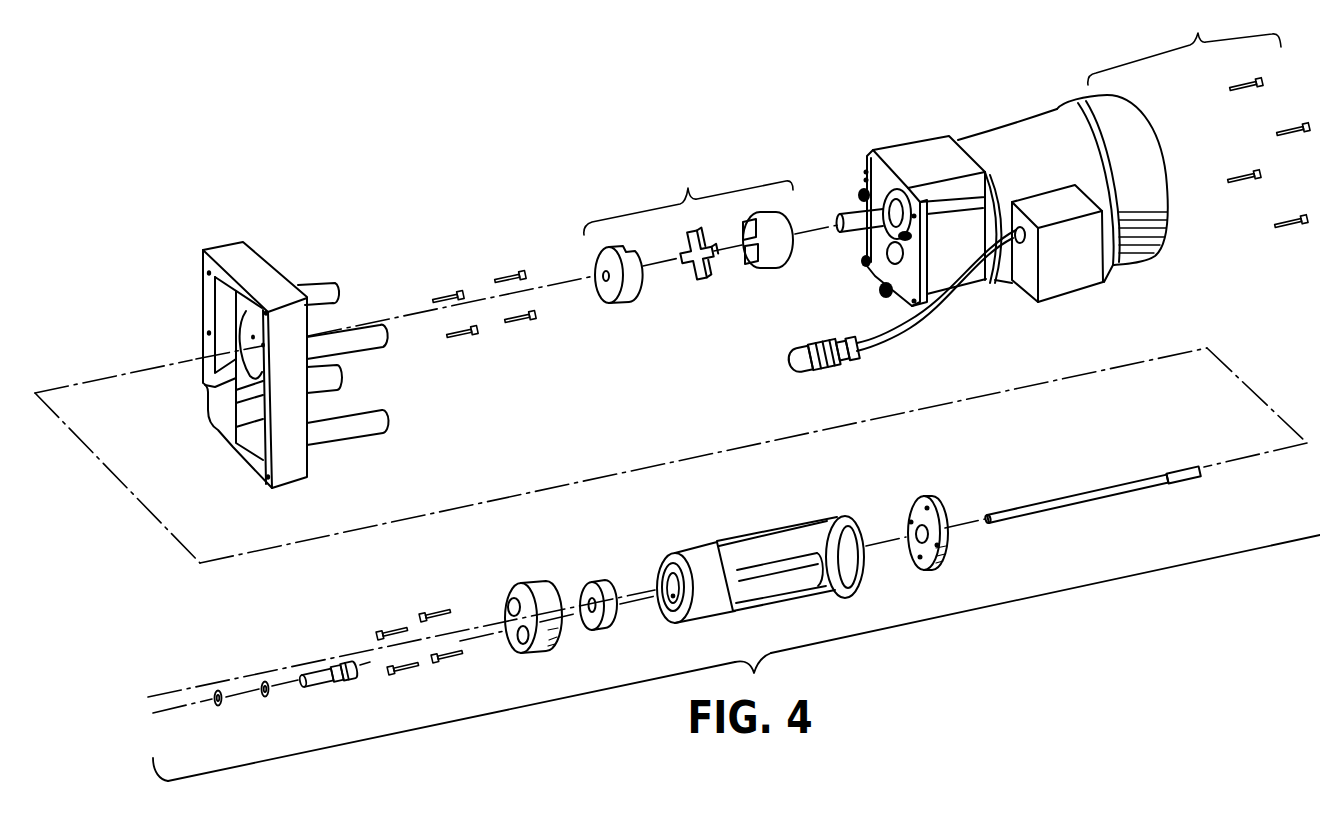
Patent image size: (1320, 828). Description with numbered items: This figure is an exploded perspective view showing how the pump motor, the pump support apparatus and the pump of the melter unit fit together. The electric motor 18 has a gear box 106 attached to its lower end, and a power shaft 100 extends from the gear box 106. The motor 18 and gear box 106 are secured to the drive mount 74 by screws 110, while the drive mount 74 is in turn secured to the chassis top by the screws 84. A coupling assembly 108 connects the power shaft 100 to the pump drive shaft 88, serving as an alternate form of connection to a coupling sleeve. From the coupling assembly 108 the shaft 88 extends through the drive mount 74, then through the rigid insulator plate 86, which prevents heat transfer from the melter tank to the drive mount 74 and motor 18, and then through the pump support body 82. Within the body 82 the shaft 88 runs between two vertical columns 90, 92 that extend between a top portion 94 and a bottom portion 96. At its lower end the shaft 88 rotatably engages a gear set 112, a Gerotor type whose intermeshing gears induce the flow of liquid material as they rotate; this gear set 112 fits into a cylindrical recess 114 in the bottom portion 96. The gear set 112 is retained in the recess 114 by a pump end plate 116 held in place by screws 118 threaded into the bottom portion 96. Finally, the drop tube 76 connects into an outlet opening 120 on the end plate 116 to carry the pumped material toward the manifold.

The electric motor 18 is at (1013, 140).
The drive mount 74 is at (250, 262).
The drop tube 76 is at (340, 687).
The pump support body 82 is at (770, 568).
The screws 84 is at (528, 307).
The rigid insulator plate 86 is at (922, 500).
The pump drive shaft 88 is at (1053, 497).
The vertical column 90 is at (765, 540).
The vertical column 92 is at (803, 583).
The top portion 94 is at (842, 530).
The bottom portion 96 is at (697, 553).
The power shaft 100 is at (848, 213).
The gear box 106 is at (917, 152).
The coupling assembly 108 is at (694, 226).
The screws 110 is at (1298, 215).
The gear set 112 is at (605, 580).
The cylindrical recess 114 is at (677, 603).
The pump end plate 116 is at (520, 617).
The screws 118 is at (462, 652).
The outlet opening 120 is at (527, 637).